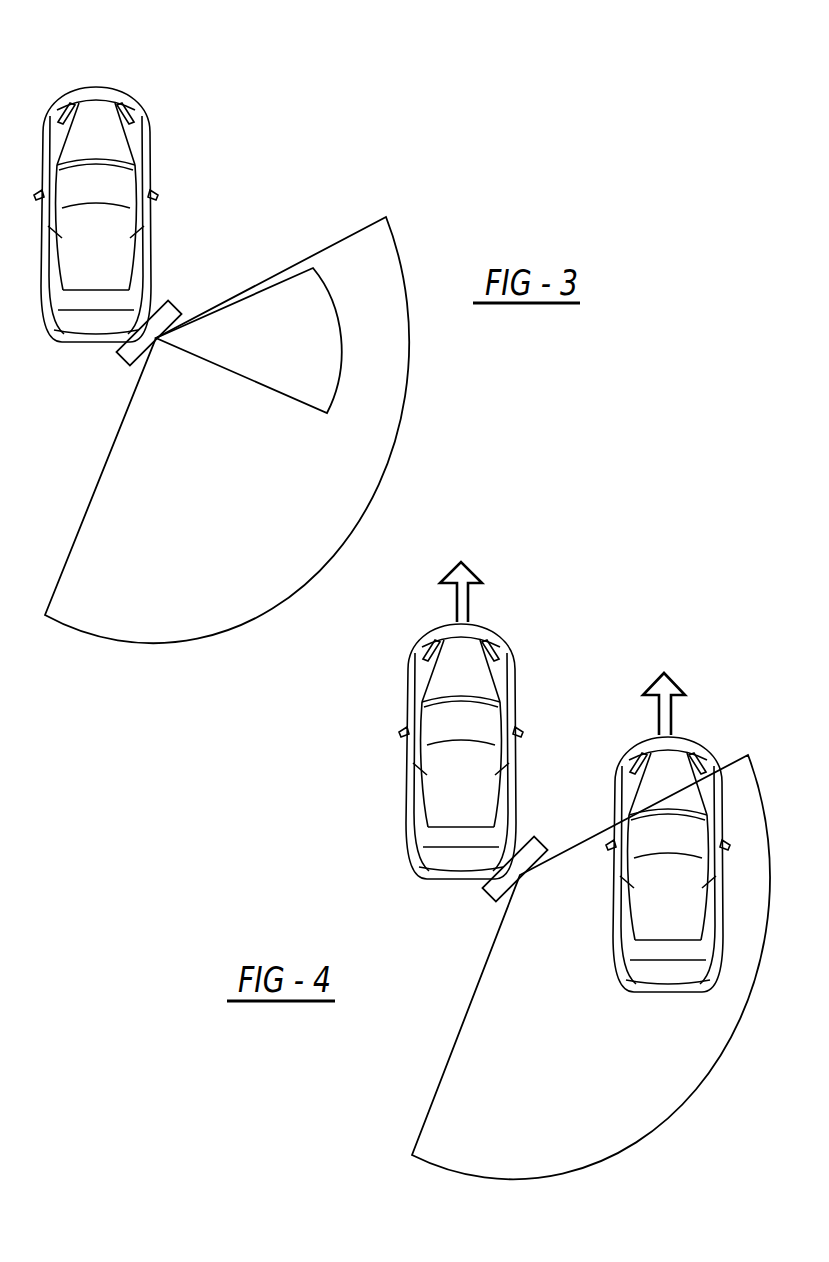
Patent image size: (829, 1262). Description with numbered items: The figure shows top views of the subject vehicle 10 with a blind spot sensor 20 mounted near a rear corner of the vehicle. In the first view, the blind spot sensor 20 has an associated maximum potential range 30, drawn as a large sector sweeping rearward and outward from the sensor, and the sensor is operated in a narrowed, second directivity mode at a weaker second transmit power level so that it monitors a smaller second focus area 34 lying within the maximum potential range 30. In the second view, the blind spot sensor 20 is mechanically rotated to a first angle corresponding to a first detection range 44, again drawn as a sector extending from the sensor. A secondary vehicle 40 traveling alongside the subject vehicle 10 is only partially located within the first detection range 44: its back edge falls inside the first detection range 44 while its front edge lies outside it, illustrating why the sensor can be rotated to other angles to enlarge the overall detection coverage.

In FIG. 3, the vehicle 10 is at (163, 72).
In FIG. 4, the vehicle 10 is at (512, 623).
In FIG. 3, the blind spot sensor 20 is at (122, 362).
In FIG. 4, the blind spot sensor 20 is at (487, 900).
In FIG. 3, the maximum potential range 30 is at (100, 639).
In FIG. 3, the second focus area 34 is at (282, 310).
In FIG. 4, the secondary vehicle 40 is at (708, 732).
In FIG. 4, the first detection range 44 is at (705, 1075).